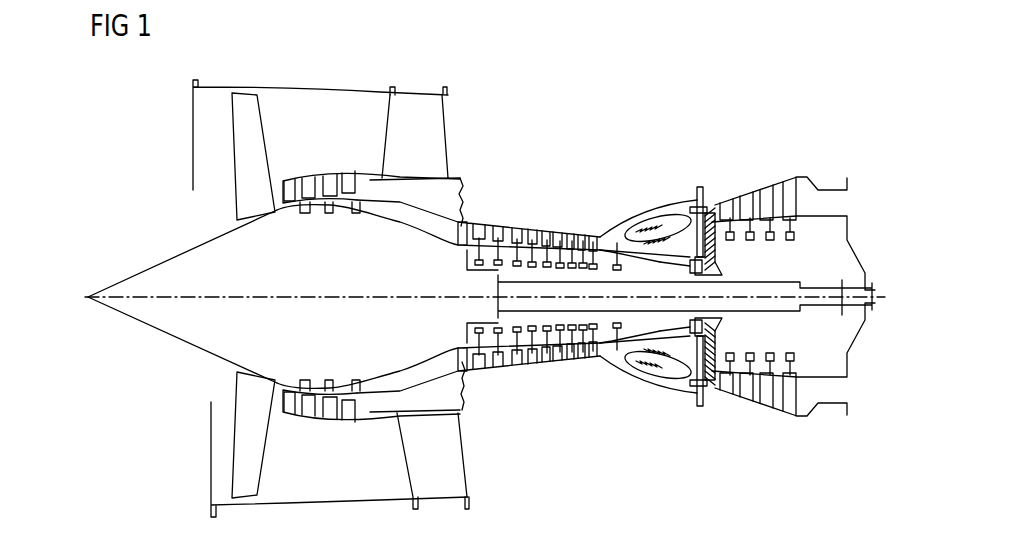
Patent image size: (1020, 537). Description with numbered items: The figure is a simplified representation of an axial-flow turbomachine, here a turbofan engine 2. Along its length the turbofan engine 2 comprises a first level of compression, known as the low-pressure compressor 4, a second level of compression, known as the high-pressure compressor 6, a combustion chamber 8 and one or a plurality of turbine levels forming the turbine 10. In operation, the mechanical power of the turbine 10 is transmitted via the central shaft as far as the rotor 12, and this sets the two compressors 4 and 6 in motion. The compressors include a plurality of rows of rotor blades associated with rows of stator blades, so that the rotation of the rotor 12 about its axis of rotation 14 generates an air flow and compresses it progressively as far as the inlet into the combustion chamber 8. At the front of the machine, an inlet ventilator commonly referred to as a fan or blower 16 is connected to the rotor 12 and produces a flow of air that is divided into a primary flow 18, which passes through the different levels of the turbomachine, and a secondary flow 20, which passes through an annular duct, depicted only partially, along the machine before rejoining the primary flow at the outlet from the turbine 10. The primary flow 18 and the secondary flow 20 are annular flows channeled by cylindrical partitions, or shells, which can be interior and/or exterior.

The turbofan engine 2 is at (646, 119).
The low-pressure compressor 4 is at (300, 213).
The high-pressure compressor 6 is at (505, 227).
The combustion chamber 8 is at (637, 237).
The turbine 10 is at (773, 197).
The rotor 12 is at (170, 321).
The axis of rotation 14 is at (335, 300).
The fan 16 is at (250, 151).
The primary flow 18 is at (378, 198).
The secondary flow 20 is at (454, 126).